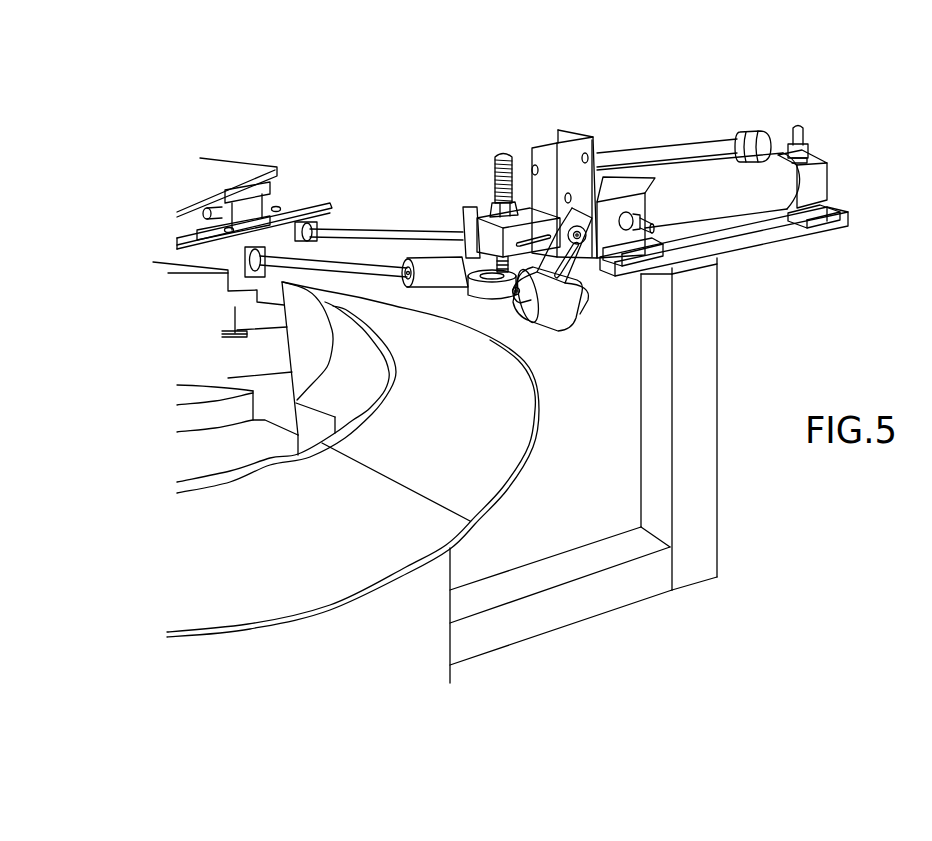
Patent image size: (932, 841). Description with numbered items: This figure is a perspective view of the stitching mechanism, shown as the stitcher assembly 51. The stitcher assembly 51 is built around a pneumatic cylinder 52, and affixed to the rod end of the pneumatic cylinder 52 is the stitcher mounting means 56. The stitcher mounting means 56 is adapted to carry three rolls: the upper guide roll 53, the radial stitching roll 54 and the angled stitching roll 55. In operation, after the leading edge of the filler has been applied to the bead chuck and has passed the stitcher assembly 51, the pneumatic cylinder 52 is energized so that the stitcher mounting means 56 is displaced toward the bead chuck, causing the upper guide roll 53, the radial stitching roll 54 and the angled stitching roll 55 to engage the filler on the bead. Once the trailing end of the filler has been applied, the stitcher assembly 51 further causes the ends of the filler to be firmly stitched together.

The stitcher assembly 51 is at (707, 122).
The pneumatic cylinder 52 is at (743, 198).
The upper guide roll 53 is at (440, 263).
The radial stitching roll 54 is at (488, 293).
The angled stitching roll 55 is at (557, 313).
The stitcher mounting means 56 is at (562, 150).